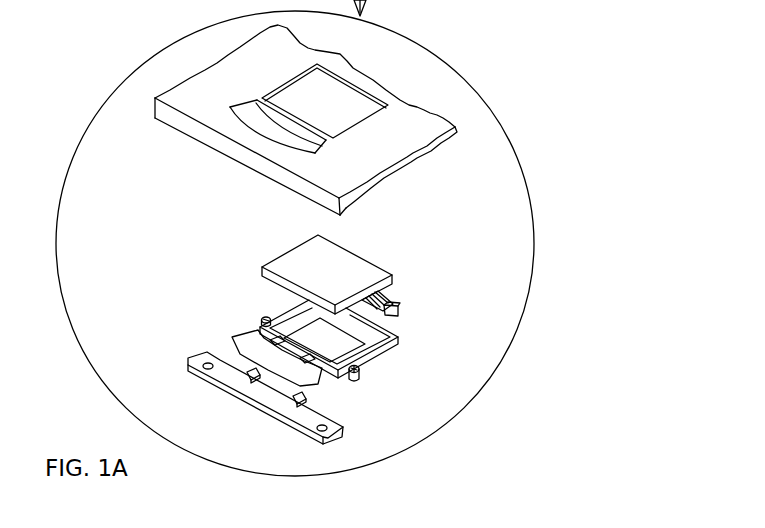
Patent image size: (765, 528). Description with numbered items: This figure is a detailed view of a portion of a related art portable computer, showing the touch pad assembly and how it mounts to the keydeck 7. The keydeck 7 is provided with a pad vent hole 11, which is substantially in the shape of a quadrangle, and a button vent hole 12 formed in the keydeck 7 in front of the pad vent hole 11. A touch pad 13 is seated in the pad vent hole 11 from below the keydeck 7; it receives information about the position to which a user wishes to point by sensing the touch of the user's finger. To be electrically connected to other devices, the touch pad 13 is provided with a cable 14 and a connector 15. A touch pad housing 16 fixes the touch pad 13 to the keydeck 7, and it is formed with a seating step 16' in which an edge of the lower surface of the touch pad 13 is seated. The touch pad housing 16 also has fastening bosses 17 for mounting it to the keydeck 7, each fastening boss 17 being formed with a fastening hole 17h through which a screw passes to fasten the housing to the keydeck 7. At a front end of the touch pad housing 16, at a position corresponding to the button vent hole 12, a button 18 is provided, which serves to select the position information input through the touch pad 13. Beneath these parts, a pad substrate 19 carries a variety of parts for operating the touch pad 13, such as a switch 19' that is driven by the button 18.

The keydeck 7 is at (188, 102).
The pad vent hole 11 is at (350, 117).
The button vent hole 12 is at (268, 126).
The touch pad 13 is at (352, 260).
The cable 14 is at (383, 297).
The connector 15 is at (398, 310).
The touch pad housing 16 is at (372, 351).
The seating step 16' is at (372, 339).
The fastening bosses 17 is at (263, 322).
The fastening hole 17h is at (366, 370).
The button 18 is at (234, 344).
The pad substrate 19 is at (265, 404).
The switch 19' is at (245, 403).